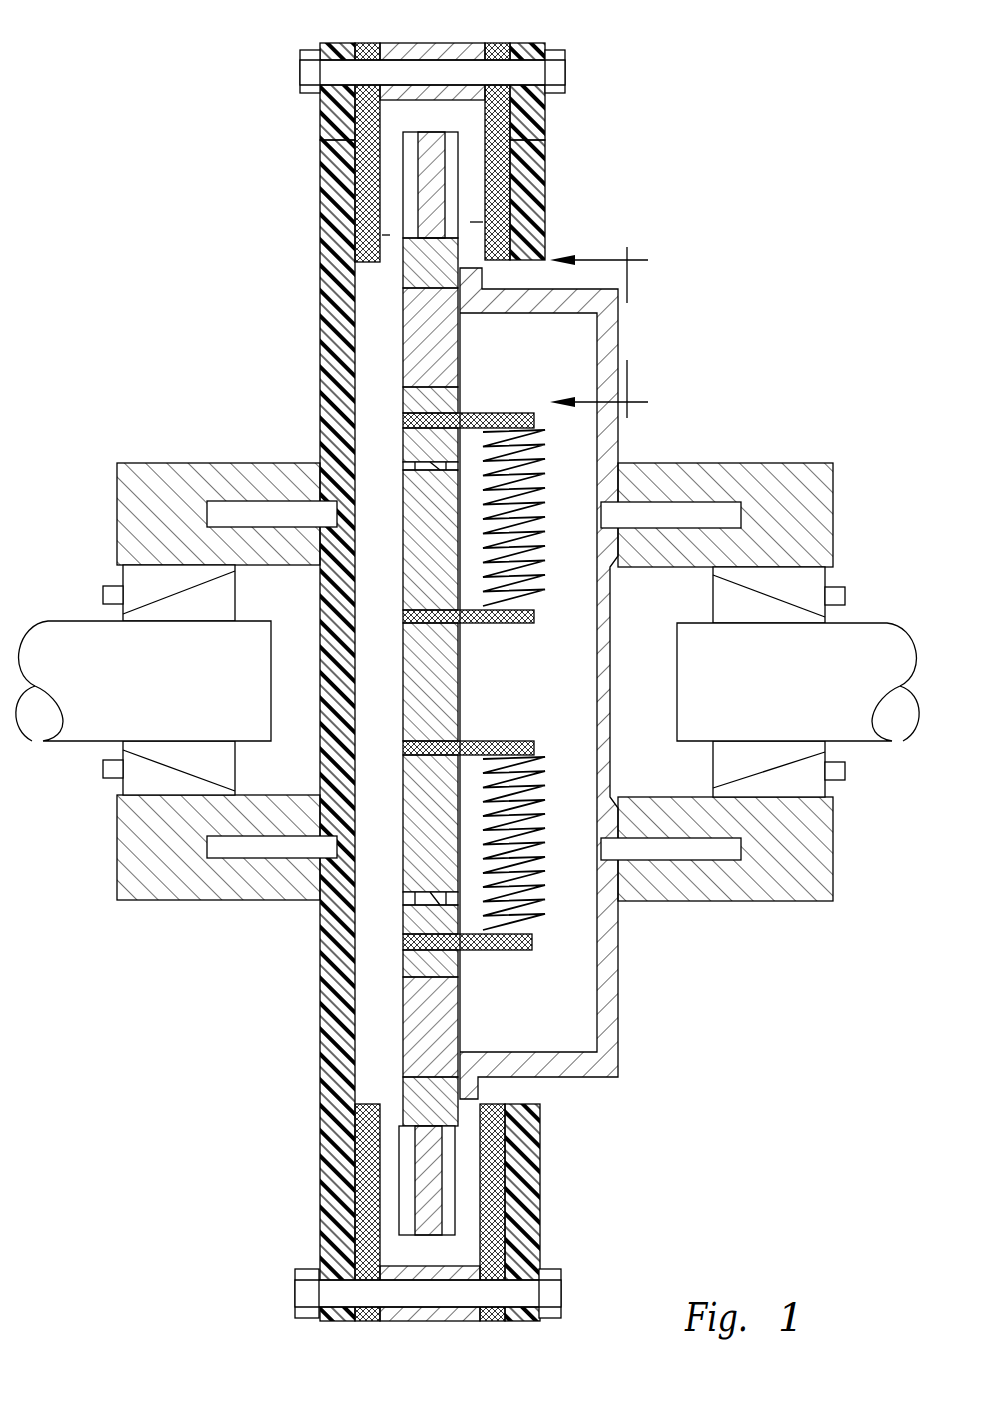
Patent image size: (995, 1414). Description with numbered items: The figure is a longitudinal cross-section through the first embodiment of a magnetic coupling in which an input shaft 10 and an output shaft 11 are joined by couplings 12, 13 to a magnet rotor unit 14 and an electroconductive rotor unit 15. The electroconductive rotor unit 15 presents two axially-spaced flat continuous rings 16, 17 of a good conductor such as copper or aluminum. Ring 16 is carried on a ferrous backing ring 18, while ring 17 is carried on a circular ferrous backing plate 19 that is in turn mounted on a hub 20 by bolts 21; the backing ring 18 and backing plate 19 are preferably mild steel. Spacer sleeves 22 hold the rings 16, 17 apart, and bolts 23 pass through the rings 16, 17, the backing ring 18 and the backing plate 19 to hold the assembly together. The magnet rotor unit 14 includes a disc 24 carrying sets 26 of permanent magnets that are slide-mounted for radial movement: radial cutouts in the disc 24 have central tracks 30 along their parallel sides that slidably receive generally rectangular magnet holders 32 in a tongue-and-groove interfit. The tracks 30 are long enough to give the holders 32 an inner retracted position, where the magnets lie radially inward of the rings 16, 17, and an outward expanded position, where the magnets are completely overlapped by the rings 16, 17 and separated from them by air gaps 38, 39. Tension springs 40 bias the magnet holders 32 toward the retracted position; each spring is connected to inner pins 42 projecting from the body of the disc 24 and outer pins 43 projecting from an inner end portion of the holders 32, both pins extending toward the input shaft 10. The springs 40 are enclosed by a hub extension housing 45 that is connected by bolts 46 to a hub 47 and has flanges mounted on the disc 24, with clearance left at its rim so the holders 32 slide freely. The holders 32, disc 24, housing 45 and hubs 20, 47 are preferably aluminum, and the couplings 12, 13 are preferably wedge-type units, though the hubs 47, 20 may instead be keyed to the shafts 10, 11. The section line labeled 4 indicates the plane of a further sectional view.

The section line 4- 4 is at (611, 332).
The input shaft 10 is at (880, 640).
The output shaft 11 is at (60, 632).
The coupling 12 is at (820, 778).
The coupling 13 is at (125, 780).
The magnet rotor unit 14 is at (655, 170).
The electroconductive rotor unit 15 is at (213, 203).
The electroconductive ring 16 is at (535, 113).
The electroconductive ring 17 is at (340, 108).
The ferrous backing ring 18 is at (532, 165).
The ferrous backing plate 19 is at (337, 188).
The hub 20 is at (157, 470).
The bolts 21 is at (273, 507).
The sleeves 22 is at (470, 45).
The bolts 23 is at (398, 68).
The disc 24 is at (455, 675).
The sets of permanent magnets 26 is at (455, 1020).
The tracks 30 is at (432, 1232).
The magnet holders 32 is at (400, 1095).
The air gap 38 is at (510, 222).
The air gap 39 is at (345, 262).
The tension springs 40 is at (535, 860).
The inner pins 42 is at (525, 742).
The outer pins 43 is at (490, 950).
The hub extension housing 45 is at (610, 345).
The bolts 46 is at (693, 508).
The hub 47 is at (800, 470).